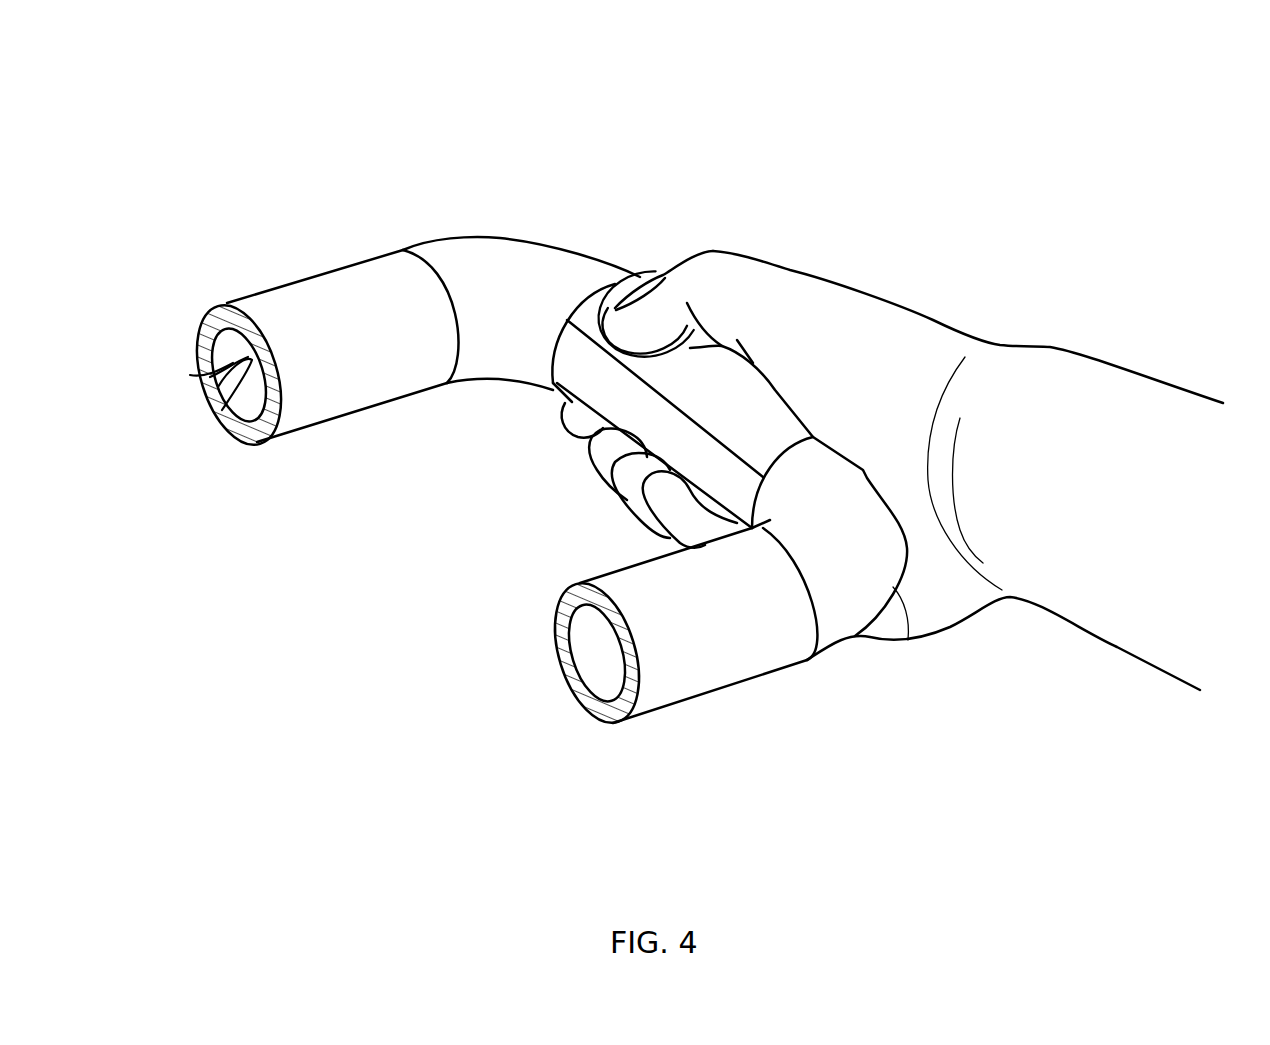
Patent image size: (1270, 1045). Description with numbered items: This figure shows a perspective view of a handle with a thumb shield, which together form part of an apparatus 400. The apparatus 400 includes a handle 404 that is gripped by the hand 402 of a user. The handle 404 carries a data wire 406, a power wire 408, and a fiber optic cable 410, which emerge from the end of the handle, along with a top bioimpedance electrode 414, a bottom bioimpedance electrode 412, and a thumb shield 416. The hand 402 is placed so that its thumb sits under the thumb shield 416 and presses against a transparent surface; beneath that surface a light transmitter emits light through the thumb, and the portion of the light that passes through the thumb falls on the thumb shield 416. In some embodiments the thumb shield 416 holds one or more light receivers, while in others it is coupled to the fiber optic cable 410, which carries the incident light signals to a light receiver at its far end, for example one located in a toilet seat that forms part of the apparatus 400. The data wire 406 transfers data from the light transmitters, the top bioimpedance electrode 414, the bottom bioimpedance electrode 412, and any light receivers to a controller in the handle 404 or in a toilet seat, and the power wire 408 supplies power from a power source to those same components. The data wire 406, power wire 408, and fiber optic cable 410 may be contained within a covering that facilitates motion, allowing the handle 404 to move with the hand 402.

The apparatus 400 is at (206, 80).
The hand 402 is at (917, 345).
The handle 404 is at (488, 277).
The data wire 406 is at (210, 375).
The power wire 408 is at (207, 397).
The fiber optic cable 410 is at (228, 385).
The bottom bioimpedance electrode 412 is at (565, 393).
The top bioimpedance electrode 414 is at (743, 400).
The thumb shield 416 is at (612, 293).